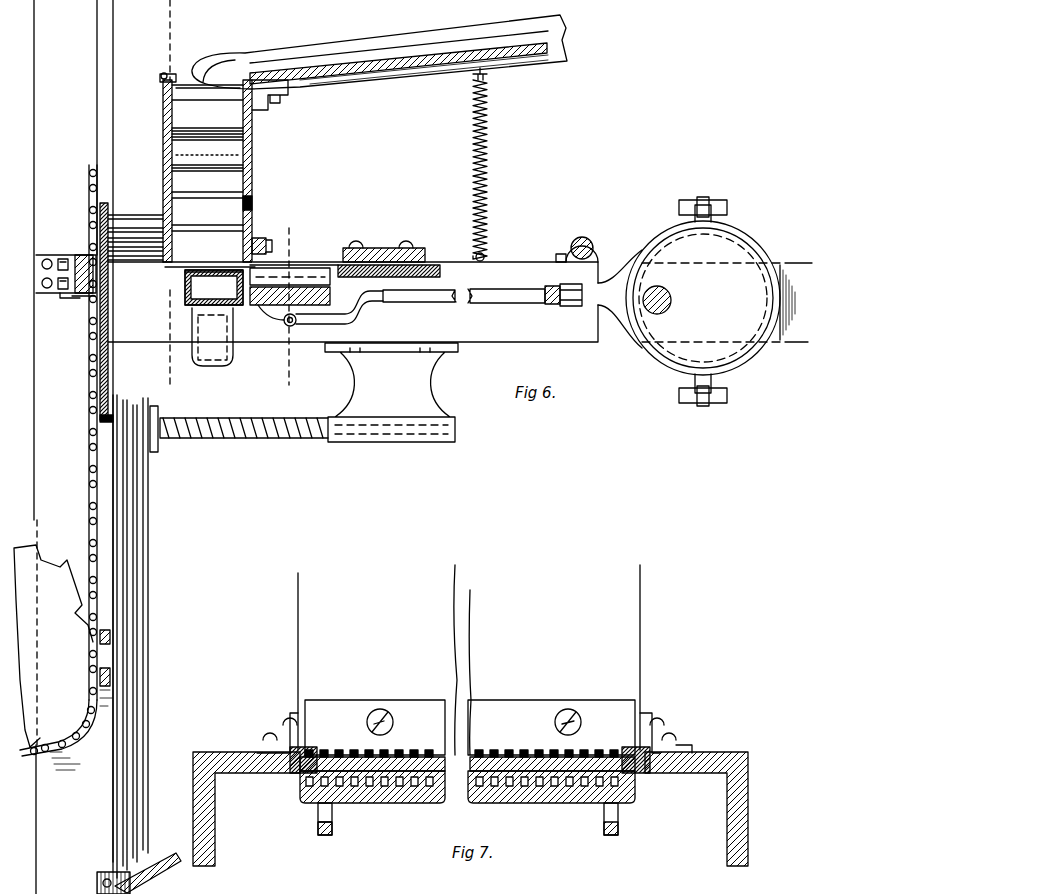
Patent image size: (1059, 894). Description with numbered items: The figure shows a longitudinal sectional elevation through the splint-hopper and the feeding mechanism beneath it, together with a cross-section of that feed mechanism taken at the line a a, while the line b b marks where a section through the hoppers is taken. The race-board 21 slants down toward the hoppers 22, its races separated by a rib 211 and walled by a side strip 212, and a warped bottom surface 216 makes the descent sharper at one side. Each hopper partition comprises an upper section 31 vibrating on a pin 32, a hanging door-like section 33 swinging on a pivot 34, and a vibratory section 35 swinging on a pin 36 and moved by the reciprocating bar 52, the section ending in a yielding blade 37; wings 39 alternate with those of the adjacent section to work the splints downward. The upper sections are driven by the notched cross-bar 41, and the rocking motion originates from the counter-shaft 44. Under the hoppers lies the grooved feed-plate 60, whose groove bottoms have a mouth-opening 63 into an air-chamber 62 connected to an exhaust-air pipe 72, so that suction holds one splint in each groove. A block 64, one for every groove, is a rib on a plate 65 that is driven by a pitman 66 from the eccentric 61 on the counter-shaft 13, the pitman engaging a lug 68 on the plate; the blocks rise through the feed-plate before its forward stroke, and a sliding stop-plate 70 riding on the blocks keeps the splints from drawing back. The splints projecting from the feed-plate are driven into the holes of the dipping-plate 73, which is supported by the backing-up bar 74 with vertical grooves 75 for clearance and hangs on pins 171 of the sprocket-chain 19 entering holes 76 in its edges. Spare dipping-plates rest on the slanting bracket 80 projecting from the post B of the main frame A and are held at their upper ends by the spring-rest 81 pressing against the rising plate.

In FIG. 6, the counter-shaft 13 is at (666, 300).
In FIG. 6, the sprocket-chain 19 is at (90, 335).
In FIG. 6, the race-board 21 is at (405, 40).
In FIG. 6, the rib 211 is at (399, 63).
In FIG. 6, the side strip 212 is at (322, 50).
In FIG. 6, the warped bottom surface 216 is at (250, 53).
In FIG. 6, the hopper 22 is at (163, 112).
In FIG. 7, the hopper 22 is at (474, 660).
In FIG. 6, the upper section 31 is at (207, 115).
In FIG. 6, the pin 32 is at (163, 136).
In FIG. 6, the door-like section 33 is at (208, 155).
In FIG. 6, the pivot 34 is at (165, 150).
In FIG. 6, the vibratory section 35 is at (207, 185).
In FIG. 6, the pin 36 is at (165, 176).
In FIG. 6, the blade 37 is at (213, 247).
In FIG. 6, the wing 39 is at (200, 100).
In FIG. 6, the cross-bar 41 is at (174, 80).
In FIG. 6, the counter-shaft 44 is at (591, 249).
In FIG. 6, the reciprocating bar 52 is at (255, 207).
In FIG. 6, the feed-plate 60 is at (318, 265).
In FIG. 7, the feed-plate 60 is at (305, 752).
In FIG. 6, the eccentric 61 is at (740, 252).
In FIG. 6, the air-chamber 62 is at (214, 287).
In FIG. 6, the mouth-opening 63 is at (190, 306).
In FIG. 6, the block 64 is at (291, 277).
In FIG. 7, the block 64 is at (341, 752).
In FIG. 6, the plate 65 is at (268, 318).
In FIG. 7, the plate 65 is at (396, 803).
In FIG. 6, the pitman 66 is at (426, 304).
In FIG. 6, the lug 68 is at (289, 327).
In FIG. 7, the lug 68 is at (324, 836).
In FIG. 6, the sliding stop-plate 70 is at (256, 243).
In FIG. 7, the sliding stop-plate 70 is at (474, 722).
In FIG. 6, the exhaust-air pipe 72 is at (210, 357).
In FIG. 6, the dipping-plate 73 is at (108, 318).
In FIG. 6, the backing-up bar 74 is at (84, 258).
In FIG. 6, the vertical groove 75 is at (86, 300).
In FIG. 6, the hole 76 is at (108, 666).
In FIG. 6, the bracket 80 is at (139, 873).
In FIG. 6, the spring-rest 81 is at (222, 440).
In FIG. 6, the pin 171 is at (68, 749).
In FIG. 6, the main frame A is at (505, 262).
In FIG. 7, the main frame A is at (255, 773).
In FIG. 6, the post B is at (53, 597).
In FIG. 6, the section line a a is at (289, 303).
In FIG. 6, the section line b b is at (173, 346).